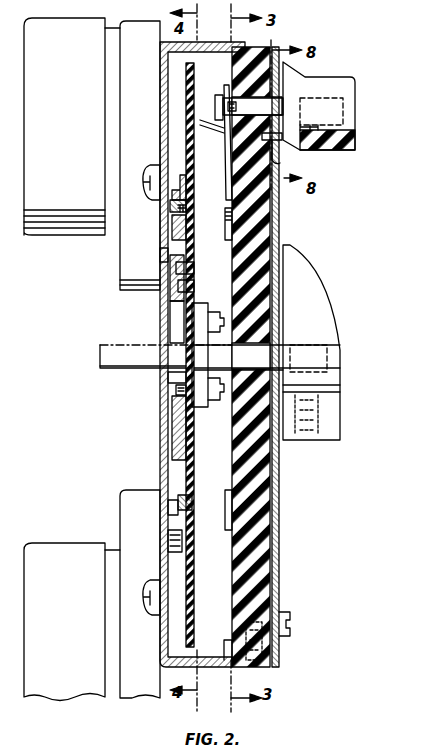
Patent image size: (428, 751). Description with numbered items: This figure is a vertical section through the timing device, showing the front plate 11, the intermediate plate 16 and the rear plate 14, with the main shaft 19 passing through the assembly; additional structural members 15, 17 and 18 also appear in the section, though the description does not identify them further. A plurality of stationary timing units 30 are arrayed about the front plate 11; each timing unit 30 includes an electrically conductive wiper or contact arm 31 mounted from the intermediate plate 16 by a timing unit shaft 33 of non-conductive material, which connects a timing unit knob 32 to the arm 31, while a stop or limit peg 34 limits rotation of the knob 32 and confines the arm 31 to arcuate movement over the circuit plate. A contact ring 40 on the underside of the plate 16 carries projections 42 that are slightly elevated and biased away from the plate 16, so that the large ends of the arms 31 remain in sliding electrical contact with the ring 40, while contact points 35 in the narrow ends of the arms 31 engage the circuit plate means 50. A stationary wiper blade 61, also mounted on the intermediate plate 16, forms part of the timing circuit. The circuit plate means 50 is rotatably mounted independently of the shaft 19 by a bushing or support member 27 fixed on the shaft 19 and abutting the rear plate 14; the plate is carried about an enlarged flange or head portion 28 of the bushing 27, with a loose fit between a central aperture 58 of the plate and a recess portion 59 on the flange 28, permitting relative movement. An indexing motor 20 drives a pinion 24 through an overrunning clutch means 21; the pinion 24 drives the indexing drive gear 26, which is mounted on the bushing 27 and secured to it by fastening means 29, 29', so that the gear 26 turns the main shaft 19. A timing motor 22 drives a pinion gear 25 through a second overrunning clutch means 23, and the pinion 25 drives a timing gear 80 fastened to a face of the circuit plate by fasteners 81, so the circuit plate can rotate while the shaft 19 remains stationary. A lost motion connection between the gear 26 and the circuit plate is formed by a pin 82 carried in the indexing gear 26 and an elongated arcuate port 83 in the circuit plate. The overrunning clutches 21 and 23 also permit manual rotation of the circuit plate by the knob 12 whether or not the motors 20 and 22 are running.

The front plate 11 is at (280, 580).
The knob 12 is at (330, 305).
The rear plate 14 is at (162, 428).
The rod 15 is at (200, 667).
The intermediate plate 16 is at (268, 548).
The dashed member 17 is at (278, 661).
The bracket 18 is at (290, 620).
The main shaft 19 is at (100, 357).
The indexing motor 20 is at (27, 34).
The overrunning clutch means 21 is at (128, 250).
The timing motor 22 is at (66, 545).
The overrunning clutch means 23 is at (128, 500).
The pinion 24 is at (166, 258).
The pinion gear 25 is at (162, 540).
The indexing drive gear 26 is at (178, 298).
The bushing or support member 27 is at (178, 345).
The flange or head portion 28 is at (210, 350).
The fastening means 29 is at (214, 401).
The fastening means 29' is at (261, 316).
The timing unit 30 is at (360, 94).
The wiper or contact arm 31 is at (222, 135).
The timing unit knob 32 is at (356, 150).
The timing unit shaft 33 is at (258, 108).
The stop or limit peg 34 is at (280, 163).
The contact points 35 is at (190, 132).
The contact ring 40 is at (230, 525).
The projections 42 is at (224, 165).
The circuit plate means 50 is at (202, 62).
The central aperture 58 is at (192, 432).
The recess portion 59 is at (170, 383).
The stationary wiper blade 61 is at (186, 212).
The timing gear 80 is at (164, 500).
The fasteners 81 is at (190, 510).
The pin 82 is at (192, 270).
The elongated arcuate port 83 is at (190, 292).